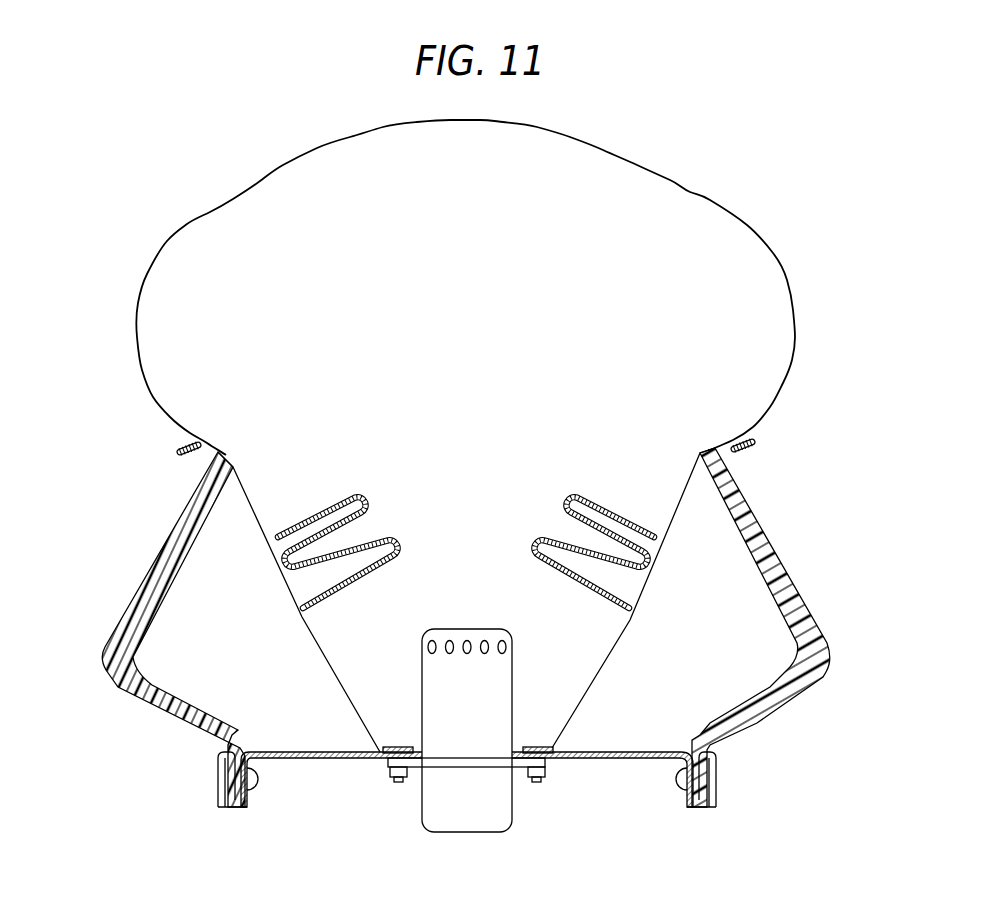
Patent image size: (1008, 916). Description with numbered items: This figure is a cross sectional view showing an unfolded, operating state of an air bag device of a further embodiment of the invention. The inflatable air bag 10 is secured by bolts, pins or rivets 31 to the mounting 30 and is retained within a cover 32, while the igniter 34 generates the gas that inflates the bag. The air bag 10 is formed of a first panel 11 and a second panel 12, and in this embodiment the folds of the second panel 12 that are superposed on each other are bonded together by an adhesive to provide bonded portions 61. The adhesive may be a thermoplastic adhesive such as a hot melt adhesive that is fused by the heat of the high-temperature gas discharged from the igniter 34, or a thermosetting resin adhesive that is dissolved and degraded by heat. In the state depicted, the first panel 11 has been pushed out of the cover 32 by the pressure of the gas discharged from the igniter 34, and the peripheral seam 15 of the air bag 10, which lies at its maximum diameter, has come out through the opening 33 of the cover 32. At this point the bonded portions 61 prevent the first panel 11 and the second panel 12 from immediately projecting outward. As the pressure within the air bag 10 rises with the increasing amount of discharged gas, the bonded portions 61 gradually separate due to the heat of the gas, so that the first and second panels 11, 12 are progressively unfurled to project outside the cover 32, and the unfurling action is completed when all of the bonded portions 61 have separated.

The air bag 10 is at (816, 348).
The first panel 11 is at (710, 200).
The second panel 12 is at (343, 692).
The peripheral seam 15 is at (180, 450).
The mounting 30 is at (283, 760).
The bolts, pins or rivets 31 is at (400, 782).
The cover 32 is at (800, 620).
The opening 33 is at (228, 460).
The igniter 34 is at (466, 827).
The bonded portions 61 is at (563, 530).